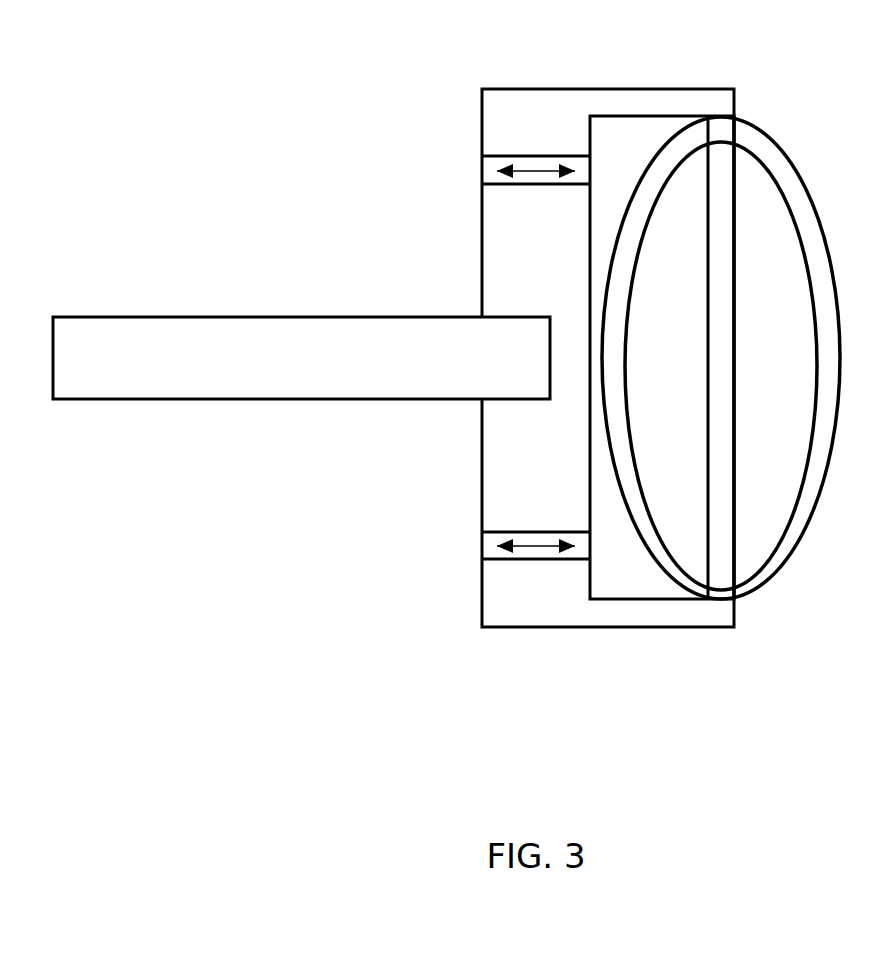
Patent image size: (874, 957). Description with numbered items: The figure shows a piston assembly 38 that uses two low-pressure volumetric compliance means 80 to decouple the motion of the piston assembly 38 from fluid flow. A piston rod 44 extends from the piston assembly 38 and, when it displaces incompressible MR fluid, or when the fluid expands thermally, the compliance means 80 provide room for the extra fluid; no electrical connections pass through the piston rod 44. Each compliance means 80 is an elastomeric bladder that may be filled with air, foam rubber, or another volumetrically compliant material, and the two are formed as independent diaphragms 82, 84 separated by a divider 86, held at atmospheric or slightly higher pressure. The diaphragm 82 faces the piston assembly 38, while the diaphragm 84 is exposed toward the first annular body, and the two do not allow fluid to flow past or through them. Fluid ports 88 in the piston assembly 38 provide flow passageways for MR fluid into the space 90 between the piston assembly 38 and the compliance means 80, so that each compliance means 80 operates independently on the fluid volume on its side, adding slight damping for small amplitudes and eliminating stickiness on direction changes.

The piston assembly 38 is at (615, 89).
The piston rod 44 is at (302, 330).
The low-pressure volumetric compliance means 80 is at (778, 134).
The diaphragm 82 is at (666, 366).
The diaphragm 84 is at (775, 366).
The divider 86 is at (721, 589).
The fluid ports 88 is at (482, 172).
The space between the piston assembly and the compliance means 90 is at (662, 357).